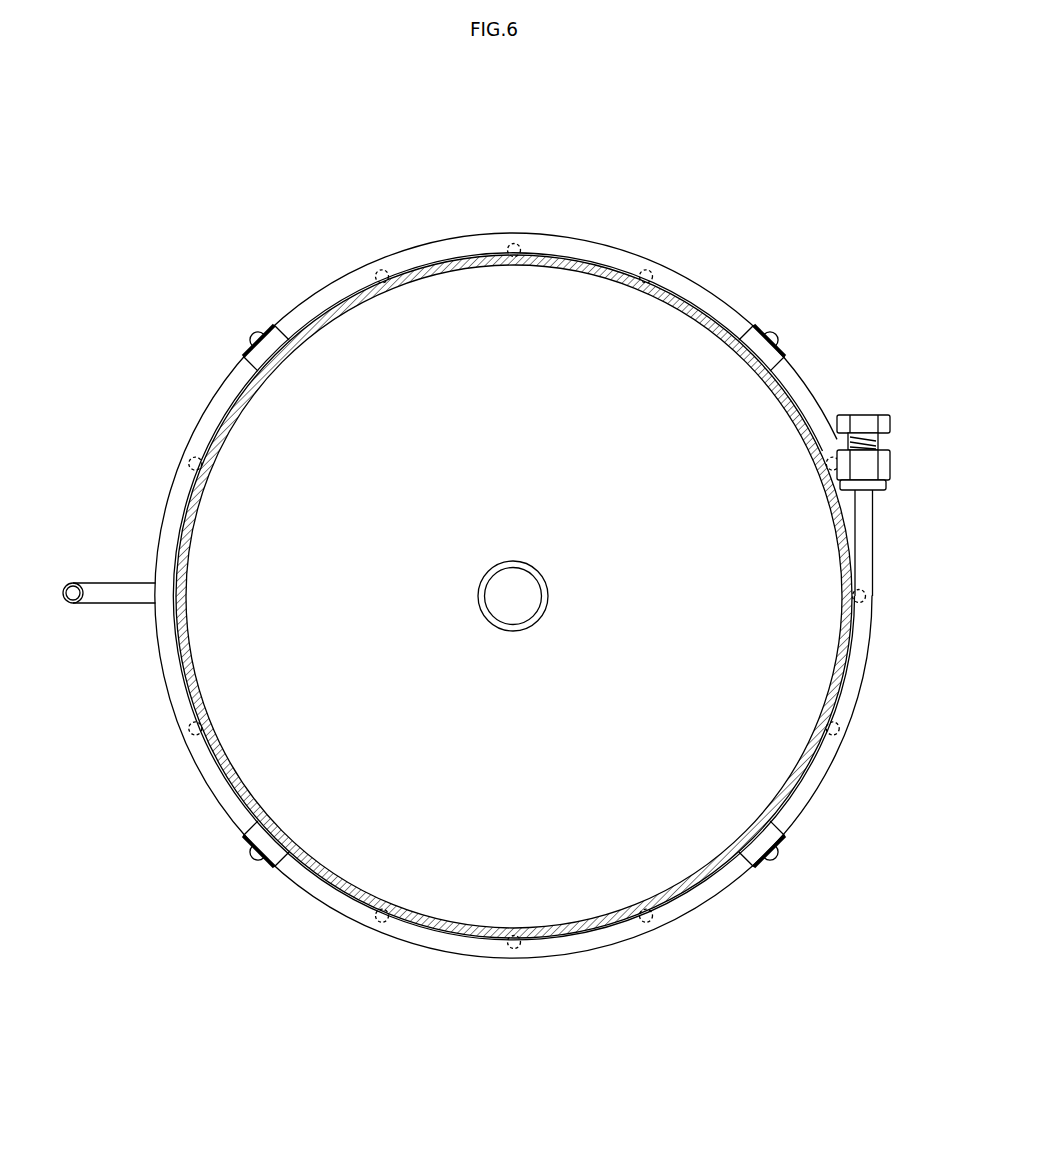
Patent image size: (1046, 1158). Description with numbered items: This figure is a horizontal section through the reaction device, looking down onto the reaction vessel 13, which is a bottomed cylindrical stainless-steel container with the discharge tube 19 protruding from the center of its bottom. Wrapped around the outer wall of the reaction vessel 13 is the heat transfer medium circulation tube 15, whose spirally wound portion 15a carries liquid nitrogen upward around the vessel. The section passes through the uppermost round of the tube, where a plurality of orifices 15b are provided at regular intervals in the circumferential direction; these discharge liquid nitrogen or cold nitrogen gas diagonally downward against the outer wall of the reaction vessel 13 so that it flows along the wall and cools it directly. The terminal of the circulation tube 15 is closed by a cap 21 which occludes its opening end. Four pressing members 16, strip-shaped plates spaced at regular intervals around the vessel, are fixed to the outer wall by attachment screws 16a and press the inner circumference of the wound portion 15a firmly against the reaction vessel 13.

The reaction vessel 13 is at (472, 266).
The heat transfer medium circulation tube 15 is at (604, 240).
The wound portion 15a is at (413, 257).
The orifices 15b is at (644, 284).
The pressing member 16 is at (274, 323).
The attachment screw 16a is at (251, 332).
The discharge tube 19 is at (513, 631).
The cap 21 is at (867, 418).